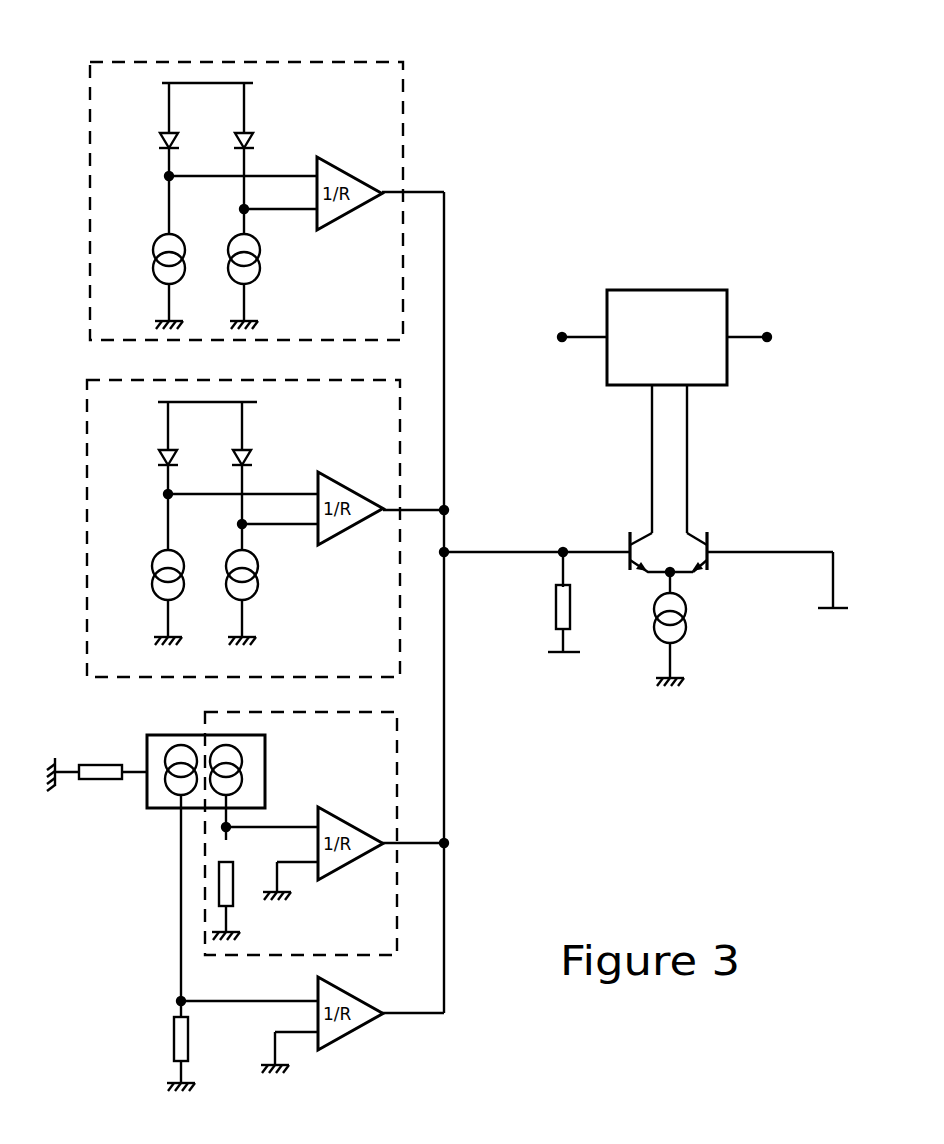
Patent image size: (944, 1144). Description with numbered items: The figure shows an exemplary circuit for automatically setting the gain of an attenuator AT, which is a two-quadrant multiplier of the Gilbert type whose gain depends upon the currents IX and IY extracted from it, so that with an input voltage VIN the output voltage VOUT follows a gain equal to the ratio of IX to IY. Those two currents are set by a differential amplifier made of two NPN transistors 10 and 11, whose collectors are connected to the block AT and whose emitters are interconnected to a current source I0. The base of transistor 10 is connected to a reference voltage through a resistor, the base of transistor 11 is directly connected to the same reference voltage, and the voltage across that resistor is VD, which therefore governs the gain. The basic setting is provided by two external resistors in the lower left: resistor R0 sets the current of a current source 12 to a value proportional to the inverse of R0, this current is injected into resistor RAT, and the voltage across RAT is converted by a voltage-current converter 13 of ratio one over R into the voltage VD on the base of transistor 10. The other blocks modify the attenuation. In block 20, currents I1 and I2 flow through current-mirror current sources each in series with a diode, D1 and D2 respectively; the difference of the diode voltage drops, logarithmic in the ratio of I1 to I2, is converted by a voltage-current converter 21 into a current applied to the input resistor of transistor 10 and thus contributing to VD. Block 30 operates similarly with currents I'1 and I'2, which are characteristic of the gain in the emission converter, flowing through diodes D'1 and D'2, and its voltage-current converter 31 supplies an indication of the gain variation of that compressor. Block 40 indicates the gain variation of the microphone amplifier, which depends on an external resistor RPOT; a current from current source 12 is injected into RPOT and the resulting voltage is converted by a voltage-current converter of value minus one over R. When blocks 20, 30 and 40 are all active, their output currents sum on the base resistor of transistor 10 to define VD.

The block 20 is at (254, 177).
The voltage-current converter 21 is at (333, 173).
The block 30 is at (259, 512).
The voltage-current converter 31 is at (335, 490).
The block 40 is at (287, 817).
The current source 12 is at (257, 755).
The voltage-current converter 13 is at (347, 997).
The NPN transistor 10 is at (626, 544).
The NPN transistor 11 is at (715, 544).
The attenuator AT is at (675, 298).
The diode D1 is at (184, 144).
The diode D2 is at (259, 144).
The diode D'1 is at (185, 461).
The diode D'2 is at (259, 461).
The current I1 is at (147, 259).
The current I2 is at (267, 259).
The current I'1 is at (145, 575).
The current I'2 is at (266, 575).
The current source I0 is at (692, 629).
The current IX is at (628, 459).
The current IY is at (711, 459).
The resistor R0 is at (97, 788).
The resistor RPOT is at (228, 895).
The resistor RAT is at (195, 1054).
The voltage VD is at (547, 600).
The input voltage VIN is at (564, 344).
The output voltage VOUT is at (771, 344).